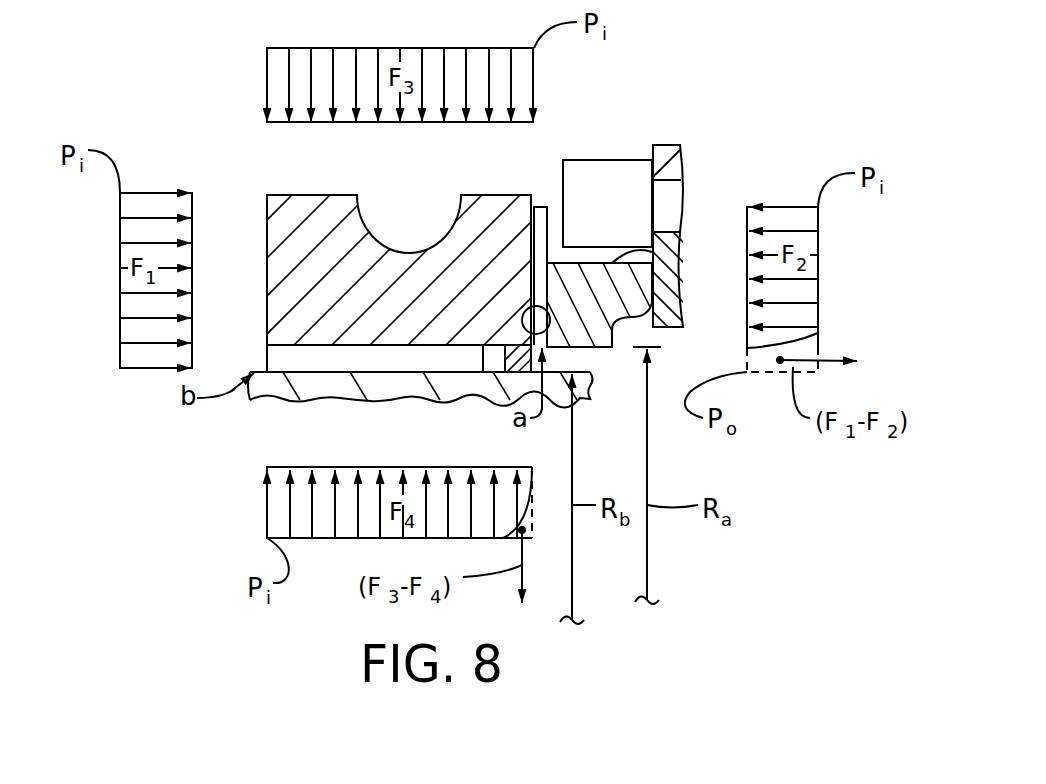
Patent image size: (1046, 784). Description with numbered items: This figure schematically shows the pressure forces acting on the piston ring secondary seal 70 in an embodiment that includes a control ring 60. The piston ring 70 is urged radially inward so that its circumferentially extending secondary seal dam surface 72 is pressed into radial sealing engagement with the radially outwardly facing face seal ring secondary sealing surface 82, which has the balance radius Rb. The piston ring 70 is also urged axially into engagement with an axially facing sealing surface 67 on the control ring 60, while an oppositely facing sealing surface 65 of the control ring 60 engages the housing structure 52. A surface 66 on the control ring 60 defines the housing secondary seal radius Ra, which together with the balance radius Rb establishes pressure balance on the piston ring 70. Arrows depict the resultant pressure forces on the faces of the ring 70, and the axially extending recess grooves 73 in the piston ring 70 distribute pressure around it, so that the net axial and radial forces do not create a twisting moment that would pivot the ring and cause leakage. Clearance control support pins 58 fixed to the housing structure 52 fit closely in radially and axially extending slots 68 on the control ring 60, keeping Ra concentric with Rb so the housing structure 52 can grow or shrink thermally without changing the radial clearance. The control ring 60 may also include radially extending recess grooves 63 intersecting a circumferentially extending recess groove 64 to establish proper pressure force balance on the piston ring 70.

The housing structure 52 is at (677, 153).
The clearance control support pin 58 is at (605, 160).
The control ring 60 is at (578, 280).
The radially extending recess groove 63 is at (541, 215).
The circumferentially extending recess groove 64 is at (532, 315).
The oppositely facing sealing surface 65 is at (685, 263).
The surface defining housing secondary seal radius 66 is at (594, 348).
The axially facing sealing surface 67 is at (517, 347).
The slot 68 is at (573, 256).
The piston ring secondary seal 70 is at (311, 200).
The secondary seal dam surface 72 is at (515, 397).
The recess groove 73 is at (372, 365).
The face seal ring secondary sealing surface 82 is at (258, 370).